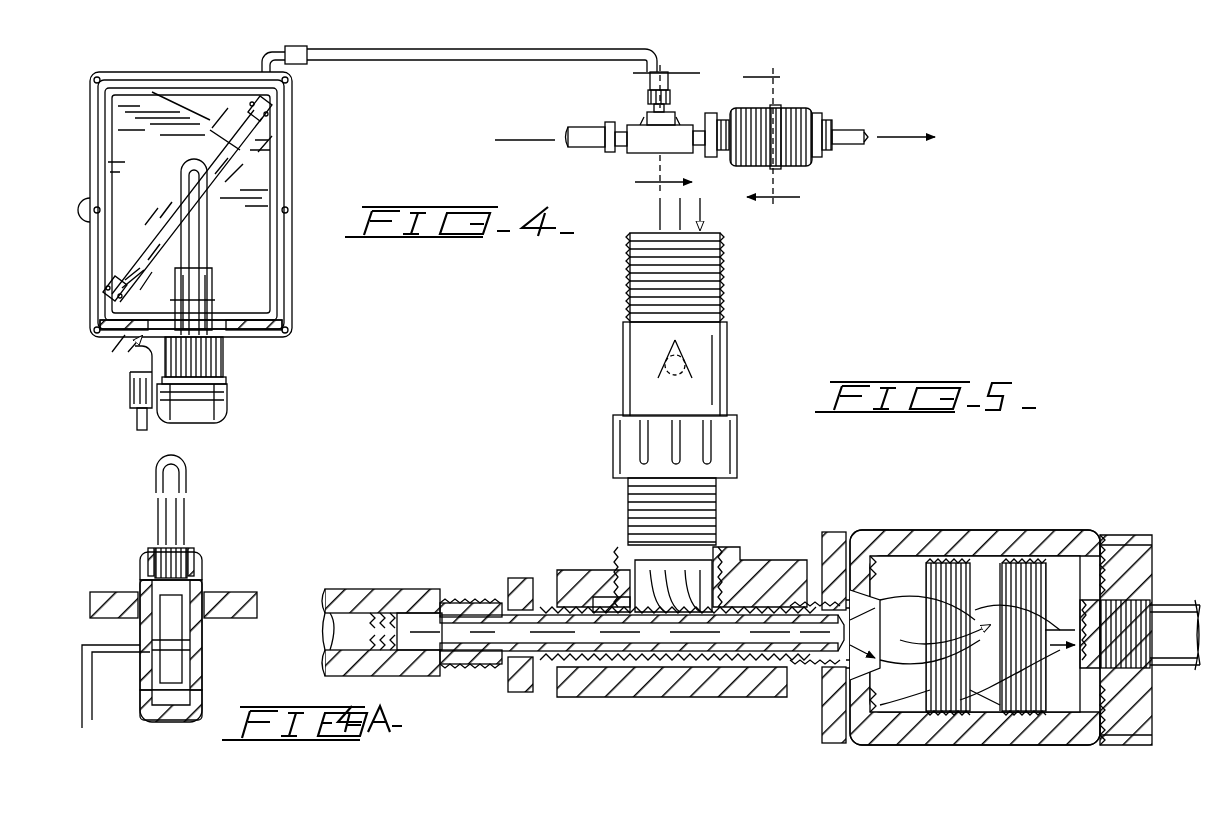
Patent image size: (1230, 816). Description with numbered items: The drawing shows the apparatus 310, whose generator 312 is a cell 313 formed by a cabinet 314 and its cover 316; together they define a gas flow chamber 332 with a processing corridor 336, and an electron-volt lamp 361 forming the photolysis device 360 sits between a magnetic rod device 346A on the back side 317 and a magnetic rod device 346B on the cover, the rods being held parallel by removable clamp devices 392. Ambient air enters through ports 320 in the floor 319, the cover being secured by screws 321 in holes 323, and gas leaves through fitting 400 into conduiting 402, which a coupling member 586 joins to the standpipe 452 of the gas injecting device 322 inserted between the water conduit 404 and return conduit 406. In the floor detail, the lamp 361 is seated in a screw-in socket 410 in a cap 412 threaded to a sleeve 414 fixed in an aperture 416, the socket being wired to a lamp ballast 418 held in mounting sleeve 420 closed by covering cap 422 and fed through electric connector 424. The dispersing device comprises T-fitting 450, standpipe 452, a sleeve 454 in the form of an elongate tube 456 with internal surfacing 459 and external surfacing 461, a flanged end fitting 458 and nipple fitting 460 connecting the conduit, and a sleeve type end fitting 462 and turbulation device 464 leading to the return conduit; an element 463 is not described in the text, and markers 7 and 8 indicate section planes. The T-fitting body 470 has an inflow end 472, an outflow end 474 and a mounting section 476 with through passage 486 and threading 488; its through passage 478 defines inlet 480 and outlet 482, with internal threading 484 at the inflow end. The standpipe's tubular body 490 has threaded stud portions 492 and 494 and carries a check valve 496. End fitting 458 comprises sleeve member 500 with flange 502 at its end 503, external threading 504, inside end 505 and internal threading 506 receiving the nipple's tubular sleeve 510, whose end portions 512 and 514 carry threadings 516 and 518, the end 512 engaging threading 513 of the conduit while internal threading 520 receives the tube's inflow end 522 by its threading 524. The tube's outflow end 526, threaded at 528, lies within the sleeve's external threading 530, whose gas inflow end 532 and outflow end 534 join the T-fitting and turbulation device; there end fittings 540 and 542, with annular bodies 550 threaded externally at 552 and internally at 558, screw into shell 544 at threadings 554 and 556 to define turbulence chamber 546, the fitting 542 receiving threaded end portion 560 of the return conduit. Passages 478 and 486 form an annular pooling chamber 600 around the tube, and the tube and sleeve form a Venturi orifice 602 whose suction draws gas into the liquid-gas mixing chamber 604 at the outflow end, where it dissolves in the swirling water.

In FIG. 4, the apparatus 310 is at (875, 79).
In FIG. 4, the generator 312 is at (324, 321).
In FIG. 4, the cell 313 is at (292, 140).
In FIG. 4, the cabinet 314 is at (290, 122).
In FIG. 4, the cover 316 is at (118, 100).
In FIG. 4, the back side 317 is at (275, 300).
In FIG. 4, the floor 319 is at (240, 330).
In FIG. 4A, the floor 319 is at (245, 610).
In FIG. 4, the apertures or ports 320 is at (185, 300).
In FIG. 4, the screws 321 is at (97, 78).
In FIG. 4, the gas injecting or dispersing device 322 is at (685, 108).
In FIG. 5, the gas injecting or dispersing device 322 is at (568, 487).
In FIG. 4, the holes 323 is at (288, 81).
In FIG. 4, the gas flow chamber 332 is at (262, 278).
In FIG. 4, the processing flow way or corridor 336 is at (208, 120).
In FIG. 4, the magnetic rod device 346A is at (172, 215).
In FIG. 4, the magnetic rod device 346B is at (250, 174).
In FIG. 4, the photolysis device 360 is at (225, 260).
In FIG. 4, the electron-volt lamp 361 is at (200, 216).
In FIG. 4A, the electron-volt lamp 361 is at (188, 478).
In FIG. 4, the removable clamp devices 392 is at (245, 98).
In FIG. 4, the fitting 400 is at (272, 55).
In FIG. 4, the conduiting 402 is at (488, 61).
In FIG. 4, the conduit 404 is at (582, 146).
In FIG. 5, the conduit 404 is at (368, 591).
In FIG. 4, the return conduit 406 is at (856, 146).
In FIG. 5, the return conduit 406 is at (1158, 621).
In FIG. 4A, the screw-in socket 410 is at (185, 550).
In FIG. 4A, the cap 412 is at (195, 552).
In FIG. 4A, the sleeve 414 is at (148, 555).
In FIG. 4A, the aperture 416 is at (145, 585).
In FIG. 4A, the lamp ballast 418 is at (203, 653).
In FIG. 4, the mounting sleeve 420 is at (220, 345).
In FIG. 4A, the mounting sleeve 420 is at (205, 628).
In FIG. 4, the covering cap 422 is at (218, 418).
In FIG. 4A, the covering cap 422 is at (180, 722).
In FIG. 4, the electric connector 424 is at (132, 404).
In FIG. 4A, the electric connector 424 is at (112, 699).
In FIG. 4, the T-fitting 450 is at (670, 150).
In FIG. 5, the T-fitting 450 is at (745, 560).
In FIG. 5, the standpipe 452 is at (730, 409).
In FIG. 5, the sleeve 454 is at (728, 665).
In FIG. 5, the elongate tube 456 is at (694, 690).
In FIG. 5, the flanged end fitting 458 is at (560, 665).
In FIG. 5, the internal surfacing 459 is at (670, 665).
In FIG. 5, the nipple type connector fitting 460 is at (466, 605).
In FIG. 5, the external surfacing 461 is at (568, 576).
In FIG. 4, the sleeve type end fitting 462 is at (710, 125).
In FIG. 5, the sleeve type end fitting 462 is at (832, 700).
In FIG. 4, the valve 463 is at (612, 150).
In FIG. 4, the turbulation device 464 is at (812, 105).
In FIG. 5, the turbulation device 464 is at (1116, 525).
In FIG. 5, the T-fitting body 470 is at (793, 665).
In FIG. 5, the in-line liquid inflow end 472 is at (658, 665).
In FIG. 5, the in-line liquid outflow end 474 is at (803, 670).
In FIG. 5, the mounting section 476 is at (715, 578).
In FIG. 5, the through passage 478 is at (718, 660).
In FIG. 5, the inflow inlet 480 is at (560, 665).
In FIG. 5, the outflow outlet 482 is at (836, 565).
In FIG. 5, the internal threading 484 is at (600, 590).
In FIG. 5, the through passage 486 is at (618, 583).
In FIG. 5, the internal threading 488 is at (720, 558).
In FIG. 5, the tubular body 490 is at (712, 374).
In FIG. 5, the externally threaded end 492 is at (705, 499).
In FIG. 5, the externally threaded end 494 is at (720, 279).
In FIG. 5, the check valve 496 is at (655, 361).
In FIG. 5, the sleeve member 500 is at (560, 588).
In FIG. 5, the flange 502 is at (528, 665).
In FIG. 5, the end 503 is at (510, 654).
In FIG. 5, the external threading 504 is at (490, 605).
In FIG. 5, the inside end 505 is at (646, 665).
In FIG. 5, the internal threading 506 is at (518, 590).
In FIG. 5, the tubular sleeve 510 is at (462, 660).
In FIG. 5, the end portion 512 is at (358, 599).
In FIG. 5, the internal threading 513 is at (336, 631).
In FIG. 5, the end portion 514 is at (490, 652).
In FIG. 5, the external threading 516 is at (415, 612).
In FIG. 5, the external threading 518 is at (520, 653).
In FIG. 5, the internal threading 520 is at (445, 655).
In FIG. 5, the liquid inflow end 522 is at (418, 652).
In FIG. 5, the external threading 524 is at (456, 603).
In FIG. 5, the liquid outflow end 526 is at (861, 599).
In FIG. 5, the external threading 528 is at (862, 667).
In FIG. 5, the external threading 530 is at (882, 555).
In FIG. 5, the gas inflow end 532 is at (856, 560).
In FIG. 5, the outflow end 534 is at (943, 575).
In FIG. 5, the end fitting 540 is at (906, 694).
In FIG. 5, the end fitting 542 is at (1128, 727).
In FIG. 5, the cylindrical shell 544 is at (1056, 570).
In FIG. 5, the turbulence chamber 546 is at (1028, 565).
In FIG. 5, the annular bodies 550 is at (1128, 557).
In FIG. 5, the external threading 552 is at (1106, 547).
In FIG. 5, the internal threading 554 is at (1013, 574).
In FIG. 5, the internal threading 556 is at (1073, 578).
In FIG. 5, the internal threading 558 is at (923, 563).
In FIG. 5, the externally threaded end portion 560 is at (1126, 671).
In FIG. 4, the coupling member 586 is at (650, 85).
In FIG. 5, the annular pooling chamber 600 is at (783, 660).
In FIG. 5, the Venturi throat or orifice 602 is at (884, 719).
In FIG. 5, the liquid-gas mixing chamber 604 is at (1018, 694).
In FIG. 4, the section line 7- 7 is at (627, 134).
In FIG. 4, the section line 8- 8 is at (771, 135).